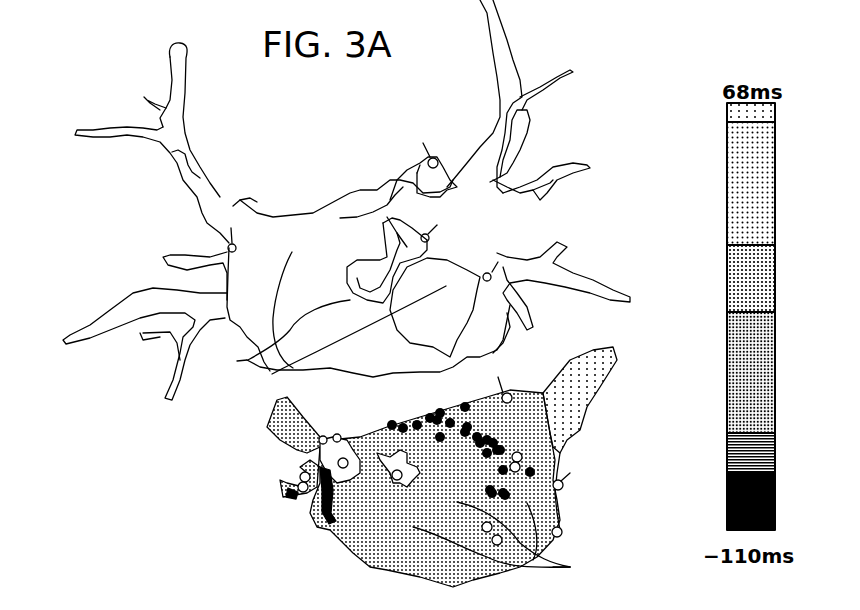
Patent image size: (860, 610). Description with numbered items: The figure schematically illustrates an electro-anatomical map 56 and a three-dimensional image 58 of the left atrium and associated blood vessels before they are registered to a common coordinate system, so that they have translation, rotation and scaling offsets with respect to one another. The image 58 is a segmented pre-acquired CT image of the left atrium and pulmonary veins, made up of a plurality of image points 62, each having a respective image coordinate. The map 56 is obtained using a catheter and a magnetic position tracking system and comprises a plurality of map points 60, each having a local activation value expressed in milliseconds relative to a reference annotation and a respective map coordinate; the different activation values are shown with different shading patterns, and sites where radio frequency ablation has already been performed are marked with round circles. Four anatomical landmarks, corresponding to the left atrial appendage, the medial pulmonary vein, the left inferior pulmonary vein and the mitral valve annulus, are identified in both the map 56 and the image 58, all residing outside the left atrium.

The three-dimensional image 58 is at (278, 140).
The image points 62 is at (229, 361).
The electro-anatomical map 56 is at (313, 508).
The map points 60 is at (579, 570).